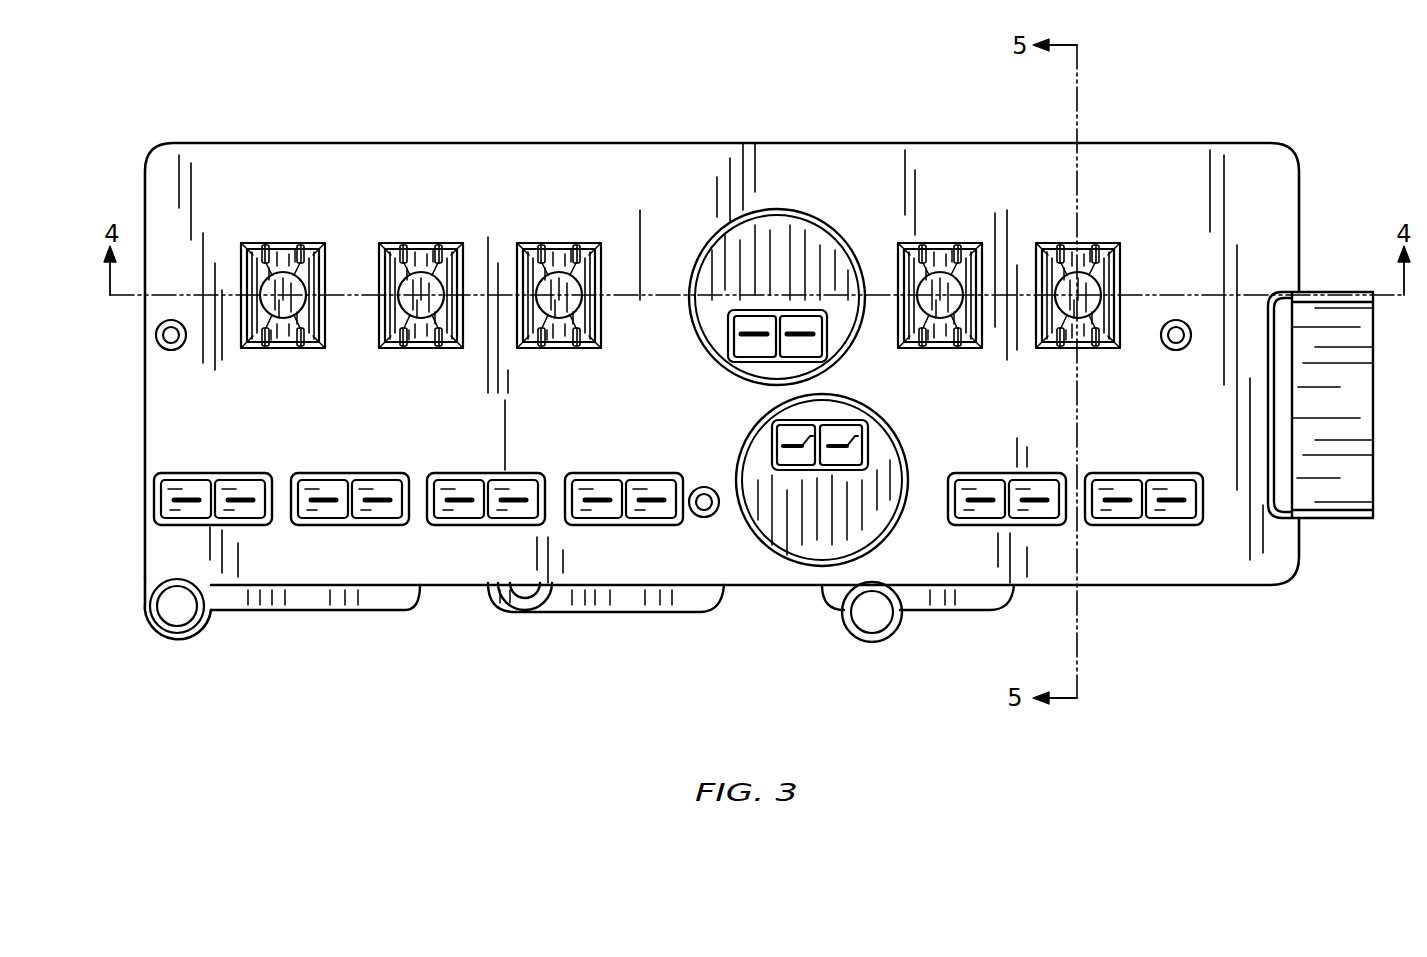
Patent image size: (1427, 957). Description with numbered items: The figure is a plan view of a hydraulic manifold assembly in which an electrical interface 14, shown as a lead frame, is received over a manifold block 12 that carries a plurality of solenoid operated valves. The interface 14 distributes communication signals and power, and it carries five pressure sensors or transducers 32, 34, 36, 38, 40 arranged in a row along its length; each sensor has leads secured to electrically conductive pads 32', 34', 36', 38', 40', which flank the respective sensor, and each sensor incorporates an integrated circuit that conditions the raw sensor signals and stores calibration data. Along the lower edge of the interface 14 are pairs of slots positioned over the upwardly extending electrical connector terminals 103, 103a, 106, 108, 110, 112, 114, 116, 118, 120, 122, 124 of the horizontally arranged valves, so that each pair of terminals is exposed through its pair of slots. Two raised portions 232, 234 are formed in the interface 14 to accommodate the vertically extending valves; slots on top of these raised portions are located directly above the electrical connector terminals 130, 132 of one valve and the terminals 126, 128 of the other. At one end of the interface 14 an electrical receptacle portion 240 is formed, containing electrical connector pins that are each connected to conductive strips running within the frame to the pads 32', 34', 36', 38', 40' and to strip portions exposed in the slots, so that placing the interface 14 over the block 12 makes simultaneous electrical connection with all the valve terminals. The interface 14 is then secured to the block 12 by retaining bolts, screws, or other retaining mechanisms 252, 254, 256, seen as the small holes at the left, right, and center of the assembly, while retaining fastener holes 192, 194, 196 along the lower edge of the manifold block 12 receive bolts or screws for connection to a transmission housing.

The manifold block 12 is at (294, 612).
The electrical interface 14 is at (788, 142).
The pressure sensor 32 is at (283, 215).
The electrically conductive pad 32' is at (270, 284).
The pressure sensor 34 is at (421, 215).
The electrically conductive pad 34' is at (408, 284).
The pressure sensor 36 is at (559, 215).
The electrically conductive pad 36' is at (546, 284).
The pressure sensor 38 is at (940, 215).
The electrically conductive pad 38' is at (928, 284).
The pressure sensor 40 is at (1114, 287).
The electrically conductive pad 40' is at (1076, 286).
The electrical connector terminal 103 is at (188, 505).
The electrical connector terminal 103a is at (240, 505).
The electrical connector terminal 106 is at (323, 505).
The electrical connector terminal 108 is at (377, 505).
The electrical connector terminal 110 is at (459, 505).
The electrical connector terminal 112 is at (513, 505).
The electrical connector terminal 114 is at (597, 505).
The electrical connector terminal 116 is at (651, 505).
The electrical connector terminal 118 is at (980, 505).
The electrical connector terminal 120 is at (1034, 505).
The electrical connector terminal 122 is at (1117, 505).
The electrical connector terminal 124 is at (1171, 505).
The electrical connector terminal 126 is at (790, 442).
The electrical connector terminal 128 is at (845, 440).
The electrical connector terminal 130 is at (750, 362).
The electrical connector terminal 132 is at (800, 362).
The retaining fastener hole 192 is at (182, 590).
The retaining fastener hole 194 is at (533, 600).
The retaining fastener hole 196 is at (875, 618).
The raised portion 232 is at (790, 553).
The raised portion 234 is at (708, 250).
The electrical receptacle portion 240 is at (1340, 519).
The retaining mechanism 252 is at (172, 352).
The retaining mechanism 254 is at (705, 517).
The retaining mechanism 256 is at (1178, 320).